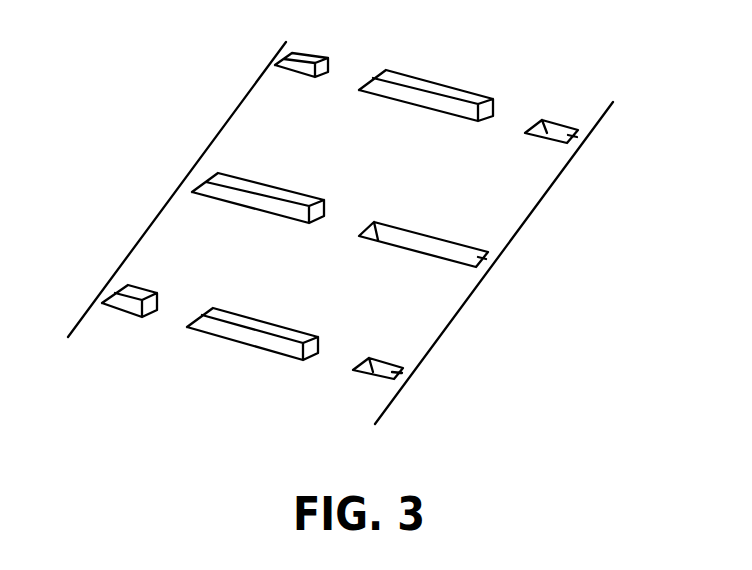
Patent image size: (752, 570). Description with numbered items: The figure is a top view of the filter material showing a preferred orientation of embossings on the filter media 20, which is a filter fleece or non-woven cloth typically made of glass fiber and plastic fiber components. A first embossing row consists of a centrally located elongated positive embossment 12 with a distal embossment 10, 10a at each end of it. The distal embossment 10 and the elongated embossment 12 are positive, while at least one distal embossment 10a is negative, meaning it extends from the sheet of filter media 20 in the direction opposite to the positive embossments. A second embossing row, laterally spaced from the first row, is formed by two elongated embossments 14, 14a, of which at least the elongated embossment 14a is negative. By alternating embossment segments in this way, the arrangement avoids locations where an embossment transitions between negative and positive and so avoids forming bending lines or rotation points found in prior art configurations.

The distal embossment 10 is at (275, 64).
The negative distal embossment 10a is at (580, 142).
The elongated positive embossment 12 is at (430, 82).
The elongated embossment 14 is at (215, 176).
The negative elongated embossment 14a is at (490, 263).
The filter media 20 is at (522, 190).